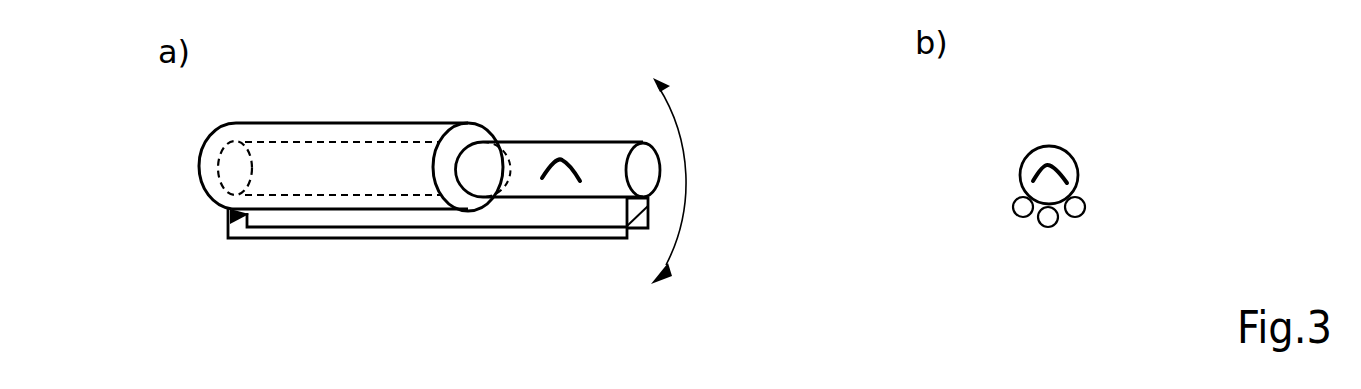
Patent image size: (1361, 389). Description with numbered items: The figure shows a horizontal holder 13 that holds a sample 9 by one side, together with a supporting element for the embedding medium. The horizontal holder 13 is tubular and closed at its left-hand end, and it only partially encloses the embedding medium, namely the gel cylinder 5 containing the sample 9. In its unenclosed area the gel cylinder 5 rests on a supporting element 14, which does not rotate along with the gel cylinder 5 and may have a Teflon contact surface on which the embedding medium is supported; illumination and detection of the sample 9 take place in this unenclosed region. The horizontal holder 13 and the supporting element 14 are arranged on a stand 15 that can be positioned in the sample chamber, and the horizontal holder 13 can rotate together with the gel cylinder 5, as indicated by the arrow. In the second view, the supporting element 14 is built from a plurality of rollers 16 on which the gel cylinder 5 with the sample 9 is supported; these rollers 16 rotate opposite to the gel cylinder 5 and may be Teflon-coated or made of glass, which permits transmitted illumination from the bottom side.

In FIG. 3a, the gel cylinder 5 is at (497, 140).
In FIG. 3b, the gel cylinder 5 is at (1060, 157).
In FIG. 3a, the sample 9 is at (562, 150).
In FIG. 3b, the sample 9 is at (1032, 165).
In FIG. 3a, the horizontal holder 13 is at (327, 134).
In FIG. 3a, the supporting element 14 is at (640, 230).
In FIG. 3a, the stand 15 is at (450, 239).
In FIG. 3b, the rollers 16 is at (1027, 220).